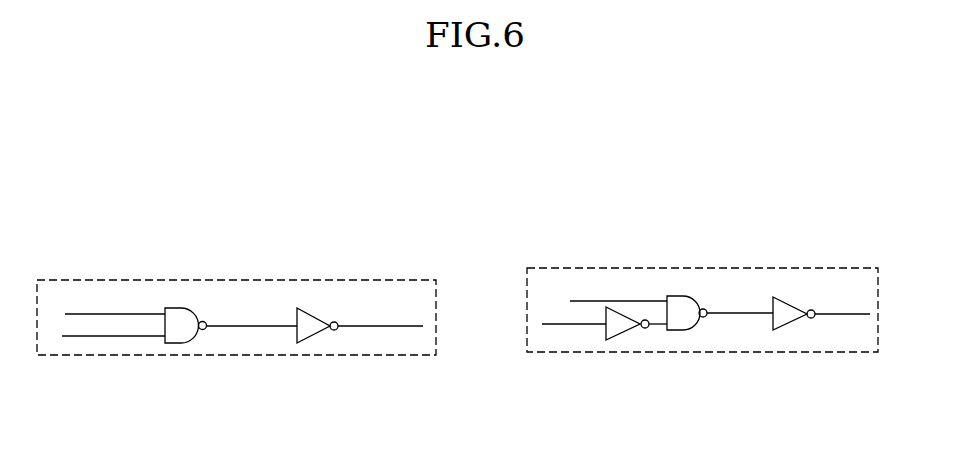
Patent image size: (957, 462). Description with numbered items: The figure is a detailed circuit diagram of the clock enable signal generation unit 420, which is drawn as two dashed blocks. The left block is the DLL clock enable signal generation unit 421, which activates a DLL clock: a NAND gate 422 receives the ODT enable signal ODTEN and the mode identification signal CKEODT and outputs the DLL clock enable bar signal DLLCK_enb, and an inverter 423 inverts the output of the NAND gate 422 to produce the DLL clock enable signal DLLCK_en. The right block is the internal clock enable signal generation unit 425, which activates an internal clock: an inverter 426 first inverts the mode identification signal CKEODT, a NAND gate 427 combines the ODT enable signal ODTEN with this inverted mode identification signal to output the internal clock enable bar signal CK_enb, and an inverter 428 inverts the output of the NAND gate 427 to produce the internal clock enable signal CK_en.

The clock enable signal generation unit 420 is at (852, 168).
The DLL clock enable signal generation unit 421 is at (77, 280).
The NAND gate 422 is at (170, 308).
The inverter 423 is at (315, 305).
The internal clock enable signal generation unit 425 is at (700, 268).
The inverter 426 is at (620, 340).
The NAND gate 427 is at (678, 330).
The inverter 428 is at (785, 330).